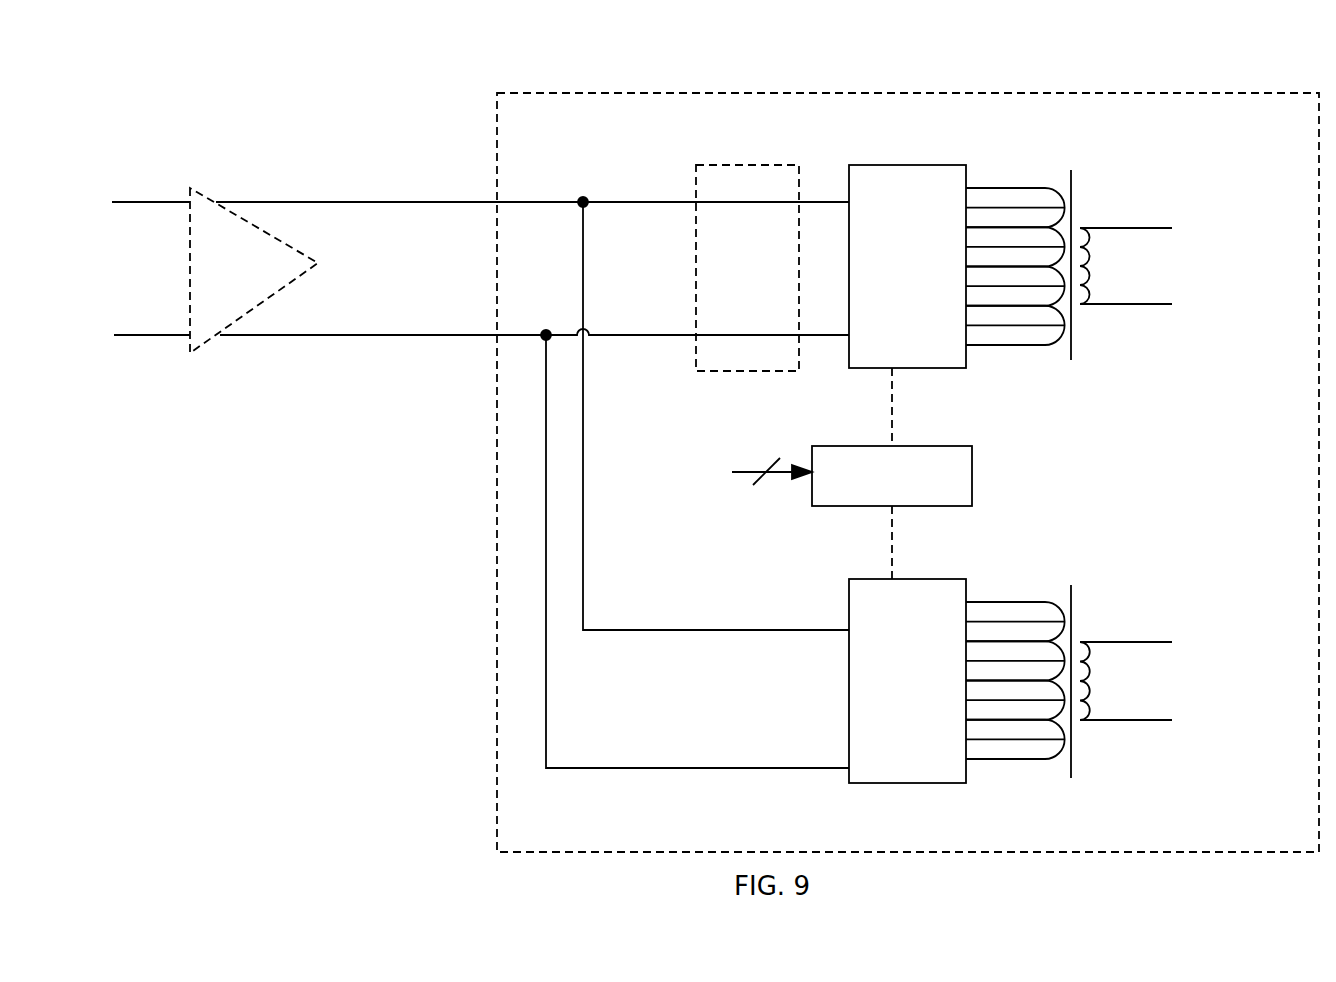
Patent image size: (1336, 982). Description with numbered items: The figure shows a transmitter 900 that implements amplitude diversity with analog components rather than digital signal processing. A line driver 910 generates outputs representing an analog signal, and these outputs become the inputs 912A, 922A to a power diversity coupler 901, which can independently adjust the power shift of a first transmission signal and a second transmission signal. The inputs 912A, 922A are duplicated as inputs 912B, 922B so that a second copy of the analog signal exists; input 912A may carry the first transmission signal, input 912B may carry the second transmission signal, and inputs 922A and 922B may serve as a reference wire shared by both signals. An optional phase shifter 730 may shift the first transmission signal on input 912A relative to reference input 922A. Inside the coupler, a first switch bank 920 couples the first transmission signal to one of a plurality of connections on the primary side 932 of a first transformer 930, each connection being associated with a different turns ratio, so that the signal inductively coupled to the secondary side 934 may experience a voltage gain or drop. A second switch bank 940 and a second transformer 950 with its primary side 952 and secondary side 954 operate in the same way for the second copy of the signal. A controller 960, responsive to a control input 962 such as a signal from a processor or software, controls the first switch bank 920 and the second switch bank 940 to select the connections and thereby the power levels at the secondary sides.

The transmitter 900 is at (135, 54).
The line driver 910 is at (212, 197).
The power diversity coupler 901 is at (584, 93).
The input 912A is at (626, 202).
The input 922A is at (640, 335).
The phase shifter 730 is at (756, 165).
The first switch bank 920 is at (914, 165).
The first transformer 930 is at (1118, 262).
The primary side 932 is at (1010, 188).
The secondary side 934 is at (1145, 228).
The controller 960 is at (836, 446).
The control input 962 is at (745, 472).
The second switch bank 940 is at (926, 579).
The second transformer 950 is at (1117, 669).
The primary side 952 is at (1010, 602).
The secondary side 954 is at (1145, 642).
The input 912B is at (718, 630).
The input 922B is at (712, 768).